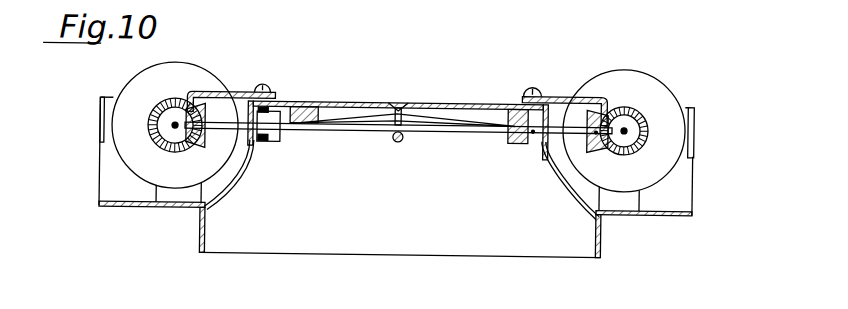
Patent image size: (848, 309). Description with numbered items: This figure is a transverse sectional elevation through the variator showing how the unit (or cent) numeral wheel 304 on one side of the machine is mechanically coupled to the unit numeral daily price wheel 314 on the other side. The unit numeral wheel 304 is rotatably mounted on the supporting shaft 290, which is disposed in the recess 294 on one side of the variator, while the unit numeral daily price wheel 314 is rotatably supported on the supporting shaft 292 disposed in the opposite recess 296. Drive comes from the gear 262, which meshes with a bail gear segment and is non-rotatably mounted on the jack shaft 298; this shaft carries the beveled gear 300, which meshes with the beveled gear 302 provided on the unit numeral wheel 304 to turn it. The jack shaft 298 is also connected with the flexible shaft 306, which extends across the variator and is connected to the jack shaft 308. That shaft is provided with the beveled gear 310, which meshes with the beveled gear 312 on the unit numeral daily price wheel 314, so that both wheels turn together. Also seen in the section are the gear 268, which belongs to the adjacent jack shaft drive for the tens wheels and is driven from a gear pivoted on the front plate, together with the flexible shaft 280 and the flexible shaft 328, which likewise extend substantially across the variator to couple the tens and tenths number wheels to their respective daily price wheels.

The gear 262 is at (277, 145).
The gear 268 is at (262, 150).
The flexible shaft 280 is at (397, 113).
The supporting shaft 290 is at (173, 126).
The supporting shaft 292 is at (624, 126).
The recess 294 is at (115, 182).
The recess 296 is at (680, 182).
The jack shaft 298 is at (212, 128).
The beveled gear 300 is at (203, 148).
The beveled gear 302 is at (170, 148).
The unit numeral wheel 304 is at (136, 82).
The flexible shaft 306 is at (372, 132).
The jack shaft 308 is at (565, 130).
The beveled gear 310 is at (595, 148).
The beveled gear 312 is at (638, 152).
The unit numeral daily price wheel 314 is at (662, 88).
The flexible shaft 328 is at (420, 121).